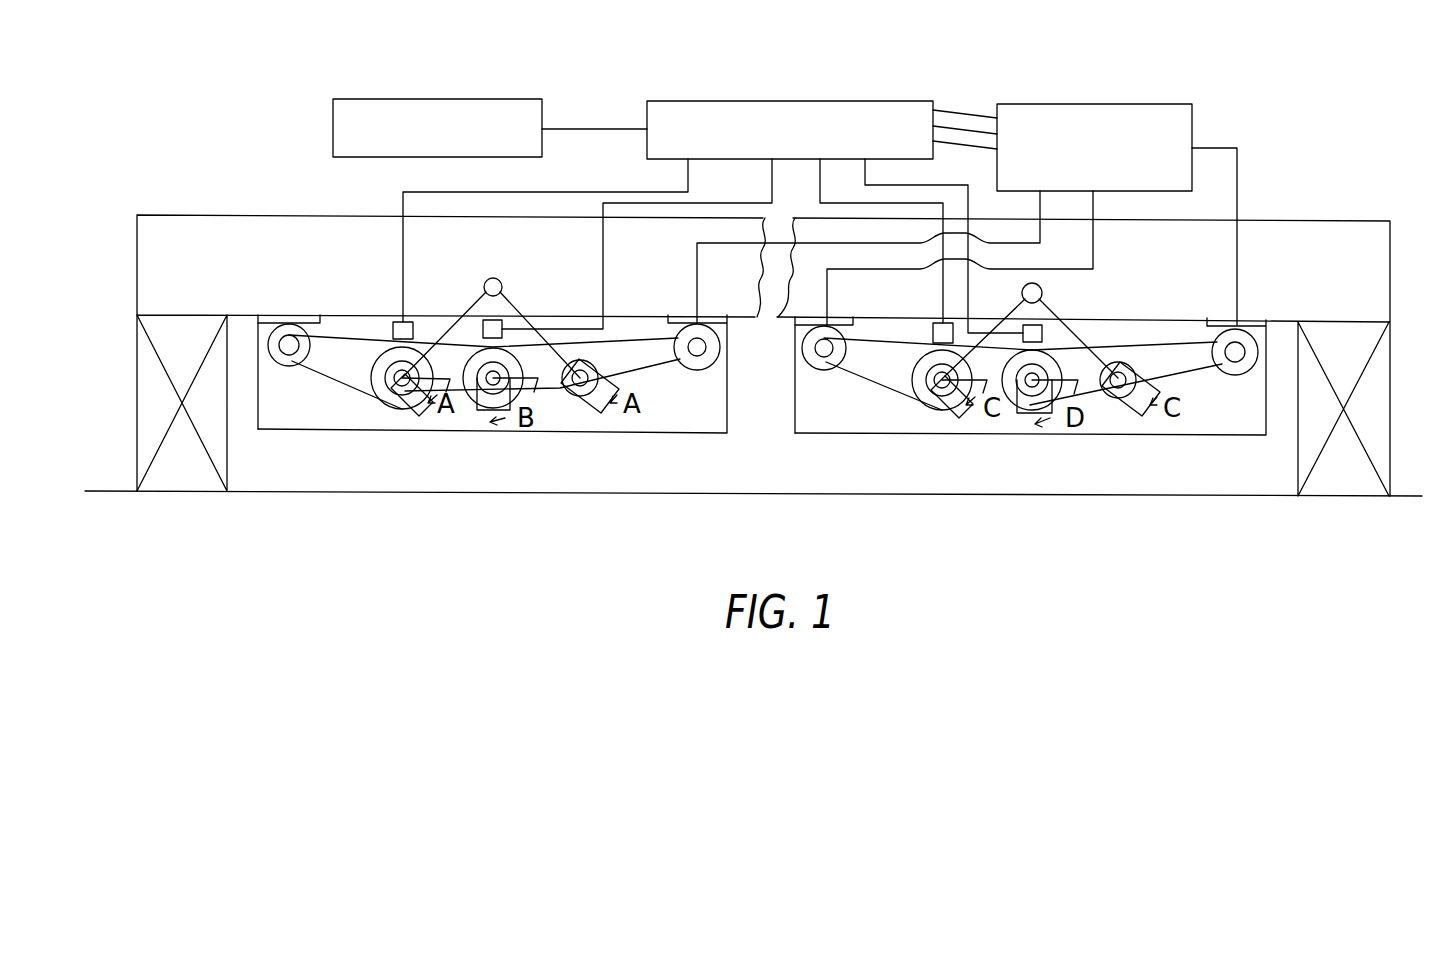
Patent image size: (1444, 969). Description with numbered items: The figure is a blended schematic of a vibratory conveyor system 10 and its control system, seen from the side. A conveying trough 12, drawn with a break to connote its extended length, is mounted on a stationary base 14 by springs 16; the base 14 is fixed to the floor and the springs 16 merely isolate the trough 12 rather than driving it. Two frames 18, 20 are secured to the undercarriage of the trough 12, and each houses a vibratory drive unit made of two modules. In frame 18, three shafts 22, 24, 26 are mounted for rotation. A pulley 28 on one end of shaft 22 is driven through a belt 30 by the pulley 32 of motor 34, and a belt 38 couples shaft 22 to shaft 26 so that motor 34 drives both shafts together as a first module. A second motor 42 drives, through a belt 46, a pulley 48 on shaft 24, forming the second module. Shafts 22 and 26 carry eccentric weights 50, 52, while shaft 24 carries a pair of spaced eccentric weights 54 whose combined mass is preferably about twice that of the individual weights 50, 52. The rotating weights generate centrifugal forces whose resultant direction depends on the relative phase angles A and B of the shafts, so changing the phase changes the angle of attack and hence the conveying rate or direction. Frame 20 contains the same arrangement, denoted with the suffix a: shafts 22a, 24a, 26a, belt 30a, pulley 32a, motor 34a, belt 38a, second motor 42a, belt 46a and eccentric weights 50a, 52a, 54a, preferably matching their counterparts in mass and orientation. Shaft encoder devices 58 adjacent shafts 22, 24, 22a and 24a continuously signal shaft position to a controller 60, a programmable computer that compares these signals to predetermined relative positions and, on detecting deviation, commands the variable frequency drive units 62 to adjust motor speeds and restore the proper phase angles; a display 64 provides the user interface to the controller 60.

The conveyor system 10 is at (1302, 107).
The trough 12 is at (1383, 243).
The stationary base 14 is at (1406, 494).
The springs 16 is at (1383, 403).
The frame 18 is at (727, 433).
The frame 20 is at (793, 420).
The shaft 22 is at (392, 367).
The shaft 24 is at (488, 385).
The shaft 26 is at (577, 388).
The pulley 28 is at (350, 335).
The belt 30 is at (337, 381).
The pulley 32 is at (281, 357).
The motor 34 is at (273, 362).
The belt 38 is at (530, 312).
The second motor 42 is at (697, 372).
The belt 46 is at (662, 372).
The pulley 48 is at (455, 318).
The eccentric weight 50 is at (407, 413).
The eccentric weight 52 is at (600, 414).
The eccentric weight 54 is at (495, 410).
The shaft encoder device 58 is at (396, 324).
The controller 60 is at (828, 101).
The variable frequency drive unit 62 is at (1130, 104).
The display 64 is at (472, 99).
The shaft 22a is at (920, 406).
The shaft 24a is at (1015, 383).
The shaft 26a is at (1105, 388).
The belt 30a is at (882, 380).
The pulley 32a is at (823, 358).
The motor 34a is at (800, 357).
The belt 38a is at (1068, 306).
The second motor 42a is at (1238, 376).
The belt 46a is at (1212, 372).
The eccentric weight 50a is at (958, 416).
The eccentric weight 52a is at (1135, 415).
The eccentric weight 54a is at (1032, 413).